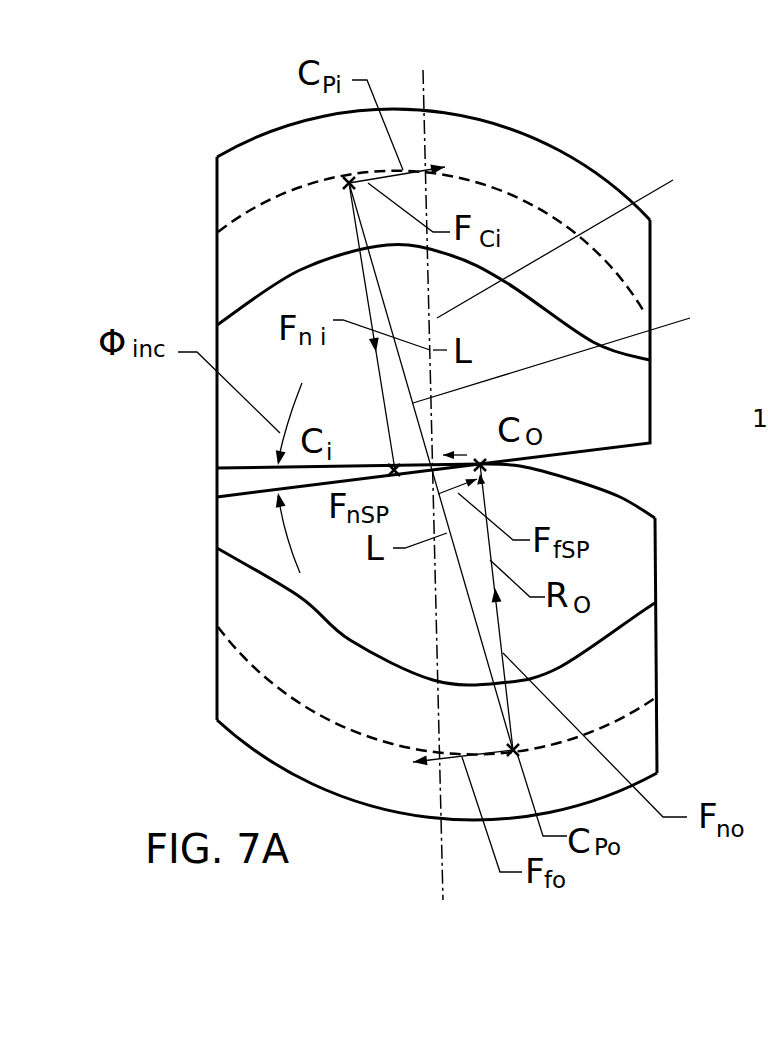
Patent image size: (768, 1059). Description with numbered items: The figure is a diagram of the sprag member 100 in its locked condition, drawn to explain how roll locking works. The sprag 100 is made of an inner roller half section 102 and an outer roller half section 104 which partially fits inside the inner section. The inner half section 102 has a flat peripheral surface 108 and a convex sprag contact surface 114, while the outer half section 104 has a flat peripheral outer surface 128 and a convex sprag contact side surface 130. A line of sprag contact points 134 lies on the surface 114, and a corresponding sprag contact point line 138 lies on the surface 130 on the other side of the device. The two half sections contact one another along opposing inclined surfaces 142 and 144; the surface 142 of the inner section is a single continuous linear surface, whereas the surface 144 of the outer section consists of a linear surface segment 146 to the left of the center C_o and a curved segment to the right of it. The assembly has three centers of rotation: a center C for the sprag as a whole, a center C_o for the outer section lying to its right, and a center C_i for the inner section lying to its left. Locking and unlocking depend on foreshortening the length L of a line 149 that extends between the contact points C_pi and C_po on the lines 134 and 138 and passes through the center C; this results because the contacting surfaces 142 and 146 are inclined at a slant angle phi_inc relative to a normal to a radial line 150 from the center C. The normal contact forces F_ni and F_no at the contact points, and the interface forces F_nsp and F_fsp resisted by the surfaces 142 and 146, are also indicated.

The sprag member 100 is at (480, 414).
The inner roller half section 102 is at (620, 342).
The outer roller half section 104 is at (700, 645).
The flat peripheral surface 108 is at (433, 141).
The convex sprag contact surface 114 is at (487, 291).
The flat peripheral outer surface 128 is at (411, 770).
The convex sprag contact side surface 130 is at (481, 626).
The line of sprag contact points 134 is at (468, 189).
The sprag contact point line 138 is at (481, 693).
The inclined surface 142 is at (292, 516).
The inclined surface 144 is at (614, 491).
The linear surface segment 146 is at (278, 450).
The line 149 is at (690, 318).
The radial line 150 is at (673, 180).